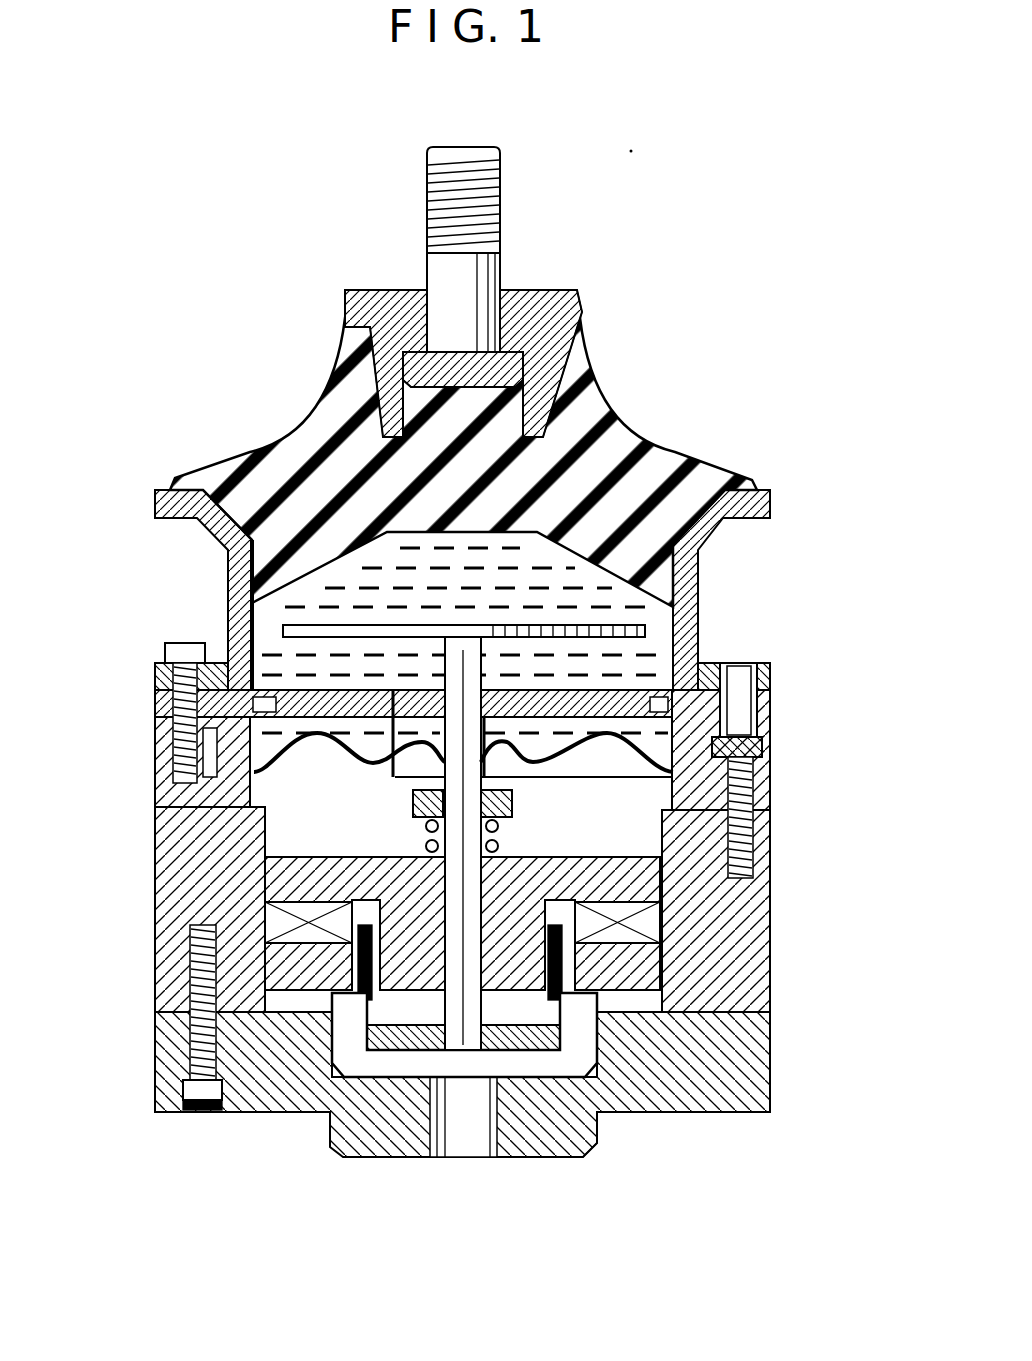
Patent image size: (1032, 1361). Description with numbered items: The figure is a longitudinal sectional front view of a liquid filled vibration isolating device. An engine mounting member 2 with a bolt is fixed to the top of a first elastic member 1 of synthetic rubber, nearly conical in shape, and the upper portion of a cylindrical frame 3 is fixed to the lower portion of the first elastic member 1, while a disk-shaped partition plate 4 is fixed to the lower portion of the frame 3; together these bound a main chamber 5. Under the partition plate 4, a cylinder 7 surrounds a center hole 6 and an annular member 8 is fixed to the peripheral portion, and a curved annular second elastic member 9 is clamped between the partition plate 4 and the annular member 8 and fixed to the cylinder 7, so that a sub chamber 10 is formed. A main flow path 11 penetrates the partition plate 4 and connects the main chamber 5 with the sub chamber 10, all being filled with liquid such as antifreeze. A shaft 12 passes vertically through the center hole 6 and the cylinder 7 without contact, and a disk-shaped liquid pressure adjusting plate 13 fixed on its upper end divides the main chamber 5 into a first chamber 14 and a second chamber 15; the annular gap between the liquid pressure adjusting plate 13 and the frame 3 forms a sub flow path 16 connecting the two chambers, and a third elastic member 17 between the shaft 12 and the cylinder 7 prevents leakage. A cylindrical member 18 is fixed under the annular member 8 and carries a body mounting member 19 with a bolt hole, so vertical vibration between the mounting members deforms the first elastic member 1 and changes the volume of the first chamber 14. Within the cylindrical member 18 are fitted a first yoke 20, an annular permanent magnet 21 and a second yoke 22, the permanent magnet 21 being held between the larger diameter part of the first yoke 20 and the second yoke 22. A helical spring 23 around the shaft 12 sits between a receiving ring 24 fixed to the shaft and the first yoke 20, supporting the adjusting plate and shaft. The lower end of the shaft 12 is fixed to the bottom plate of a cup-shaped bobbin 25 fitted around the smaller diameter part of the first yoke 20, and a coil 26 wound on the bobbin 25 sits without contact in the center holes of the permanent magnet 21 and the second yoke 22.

The first elastic member 1 is at (325, 390).
The engine mounting member 2 is at (360, 290).
The frame 3 is at (226, 557).
The partition plate 4 is at (155, 697).
The main chamber 5 is at (375, 585).
The center hole 6 is at (440, 688).
The cylinder 7 is at (392, 779).
The annular member 8 is at (155, 790).
The second elastic member 9 is at (388, 746).
The sub chamber 10 is at (155, 742).
The main flow path 11 is at (250, 707).
The shaft 12 is at (463, 1050).
The liquid pressure adjusting plate 13 is at (513, 623).
The first chamber 14 is at (493, 560).
The second chamber 15 is at (558, 663).
The sub flow path 16 is at (660, 632).
The third elastic member 17 is at (680, 725).
The cylindrical member 18 is at (155, 962).
The body mounting member 19 is at (155, 1073).
The first yoke 20 is at (640, 890).
The permanent magnet 21 is at (612, 935).
The second yoke 22 is at (565, 983).
The helical spring 23 is at (505, 835).
The receiving ring 24 is at (512, 797).
The bobbin 25 is at (547, 1047).
The coil 26 is at (604, 1080).